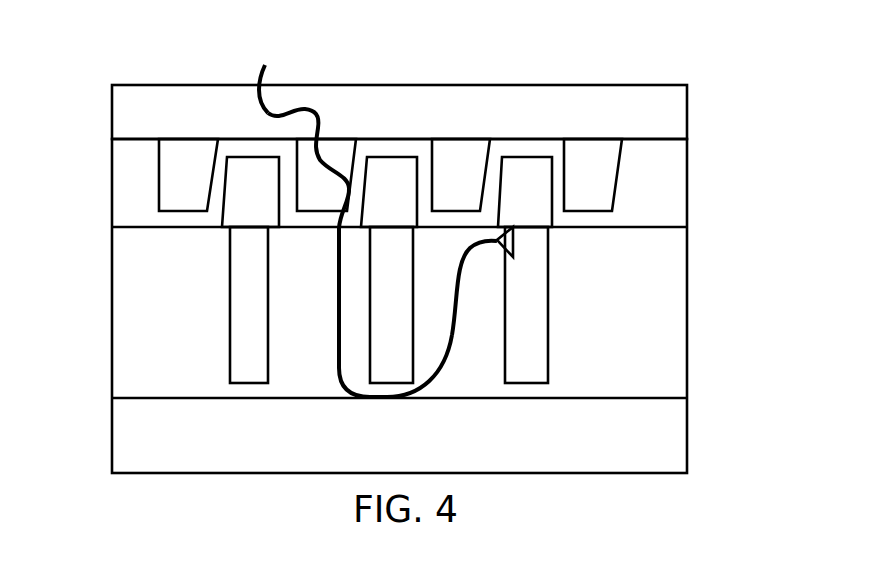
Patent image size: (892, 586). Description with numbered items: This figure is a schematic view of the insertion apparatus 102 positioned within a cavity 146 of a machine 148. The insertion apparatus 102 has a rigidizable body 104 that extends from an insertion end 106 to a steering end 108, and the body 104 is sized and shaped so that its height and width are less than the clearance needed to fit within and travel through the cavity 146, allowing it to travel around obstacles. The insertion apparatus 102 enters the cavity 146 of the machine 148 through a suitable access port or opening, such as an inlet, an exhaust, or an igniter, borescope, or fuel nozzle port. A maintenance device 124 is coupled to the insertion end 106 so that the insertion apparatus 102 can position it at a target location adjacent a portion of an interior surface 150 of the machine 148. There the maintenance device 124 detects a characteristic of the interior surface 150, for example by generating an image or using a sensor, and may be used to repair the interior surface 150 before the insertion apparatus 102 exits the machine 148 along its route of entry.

The insertion apparatus 102 is at (313, 108).
The body 104 is at (345, 253).
The insertion end 106 is at (497, 238).
The steering end 108 is at (262, 62).
The maintenance device 124 is at (516, 242).
The cavity 146 is at (125, 283).
The machine 148 is at (178, 84).
The interior surface 150 is at (528, 322).